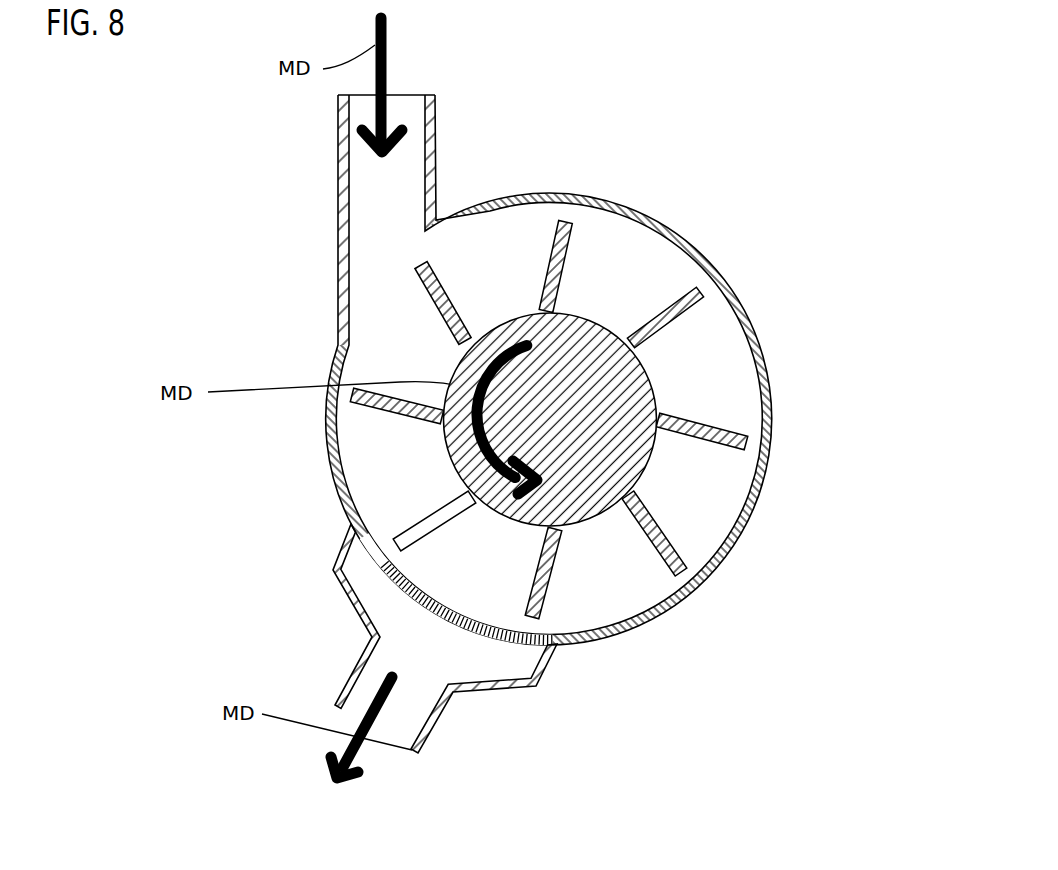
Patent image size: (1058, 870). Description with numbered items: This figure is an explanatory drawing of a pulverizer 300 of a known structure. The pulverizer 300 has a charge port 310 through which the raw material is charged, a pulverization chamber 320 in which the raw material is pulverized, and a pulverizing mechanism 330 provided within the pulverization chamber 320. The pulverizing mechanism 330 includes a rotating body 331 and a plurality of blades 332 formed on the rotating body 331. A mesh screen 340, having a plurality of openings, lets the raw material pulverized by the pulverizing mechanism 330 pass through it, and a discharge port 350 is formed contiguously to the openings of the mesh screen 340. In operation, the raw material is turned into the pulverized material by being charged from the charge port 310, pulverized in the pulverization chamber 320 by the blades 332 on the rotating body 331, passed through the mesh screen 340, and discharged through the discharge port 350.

The pulverizer 300 is at (235, 195).
The charge port 310 is at (405, 118).
The pulverization chamber 320 is at (639, 293).
The pulverizing mechanism 330 is at (527, 420).
The rotating body 331 is at (605, 404).
The blades 332 is at (426, 290).
The mesh screen 340 is at (467, 633).
The discharge port 350 is at (370, 685).